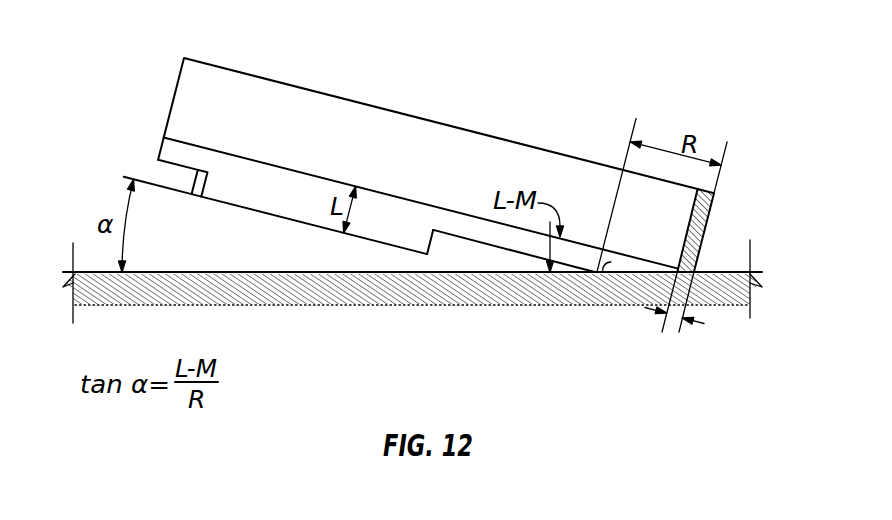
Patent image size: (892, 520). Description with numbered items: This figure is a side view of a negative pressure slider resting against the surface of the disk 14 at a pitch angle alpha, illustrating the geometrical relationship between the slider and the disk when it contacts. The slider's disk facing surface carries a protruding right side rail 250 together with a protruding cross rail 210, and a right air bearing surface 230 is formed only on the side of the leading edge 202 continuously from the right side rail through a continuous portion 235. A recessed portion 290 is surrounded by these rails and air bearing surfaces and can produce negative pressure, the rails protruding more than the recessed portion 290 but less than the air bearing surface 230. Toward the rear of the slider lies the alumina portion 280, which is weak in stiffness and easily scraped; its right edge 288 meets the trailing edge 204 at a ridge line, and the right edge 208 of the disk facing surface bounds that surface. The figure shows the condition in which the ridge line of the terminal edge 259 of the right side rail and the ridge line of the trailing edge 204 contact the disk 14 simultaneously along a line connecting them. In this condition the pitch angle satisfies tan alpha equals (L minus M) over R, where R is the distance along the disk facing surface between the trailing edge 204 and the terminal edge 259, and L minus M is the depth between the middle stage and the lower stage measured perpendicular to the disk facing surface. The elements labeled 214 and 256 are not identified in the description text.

The disk 14 is at (417, 304).
The leading edge 202 is at (176, 88).
The trailing edge 204 is at (698, 257).
The right edge 208 is at (423, 167).
The cross rail 210 is at (155, 166).
The leading edge tab/pad 214 is at (192, 181).
The air bearing surface plate 256 is at (420, 233).
The right air bearing surface 230 is at (297, 231).
The continuous portion to the right side rail 235 is at (429, 250).
The right side rail 250 is at (466, 249).
The terminal edge of the right side rail 259 is at (598, 274).
The alumina portion 280 is at (668, 333).
The right edge of the alumina portion 288 is at (707, 226).
The recessed portion 290 is at (640, 271).